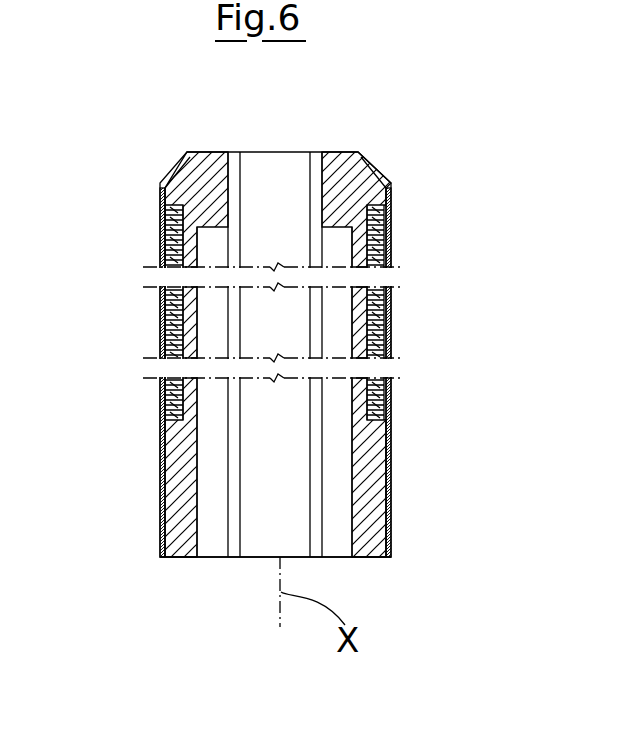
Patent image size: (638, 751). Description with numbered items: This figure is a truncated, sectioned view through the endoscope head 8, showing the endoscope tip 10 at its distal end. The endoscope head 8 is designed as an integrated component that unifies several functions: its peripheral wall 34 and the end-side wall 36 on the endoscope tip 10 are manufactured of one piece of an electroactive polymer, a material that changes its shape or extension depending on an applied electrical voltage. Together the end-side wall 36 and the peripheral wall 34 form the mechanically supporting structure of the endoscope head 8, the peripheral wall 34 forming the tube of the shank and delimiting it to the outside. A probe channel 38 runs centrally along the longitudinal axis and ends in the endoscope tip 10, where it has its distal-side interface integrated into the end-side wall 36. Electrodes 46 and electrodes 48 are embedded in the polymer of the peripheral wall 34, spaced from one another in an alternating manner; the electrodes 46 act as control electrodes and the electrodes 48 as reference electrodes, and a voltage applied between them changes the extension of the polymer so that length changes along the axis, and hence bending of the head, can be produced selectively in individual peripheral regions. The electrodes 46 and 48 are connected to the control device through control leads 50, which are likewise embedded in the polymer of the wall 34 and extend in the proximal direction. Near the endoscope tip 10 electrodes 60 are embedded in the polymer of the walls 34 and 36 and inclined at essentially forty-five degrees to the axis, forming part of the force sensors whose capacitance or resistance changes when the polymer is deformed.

The endoscope head 8 is at (391, 405).
The endoscope tip 10 is at (349, 152).
The peripheral wall 34 is at (368, 558).
The end-side wall 36 is at (203, 168).
The probe channel 38 is at (272, 185).
The control electrodes 46 is at (392, 208).
The reference electrodes 48 is at (388, 222).
The control leads 50 is at (173, 530).
The electrode 60 is at (170, 176).